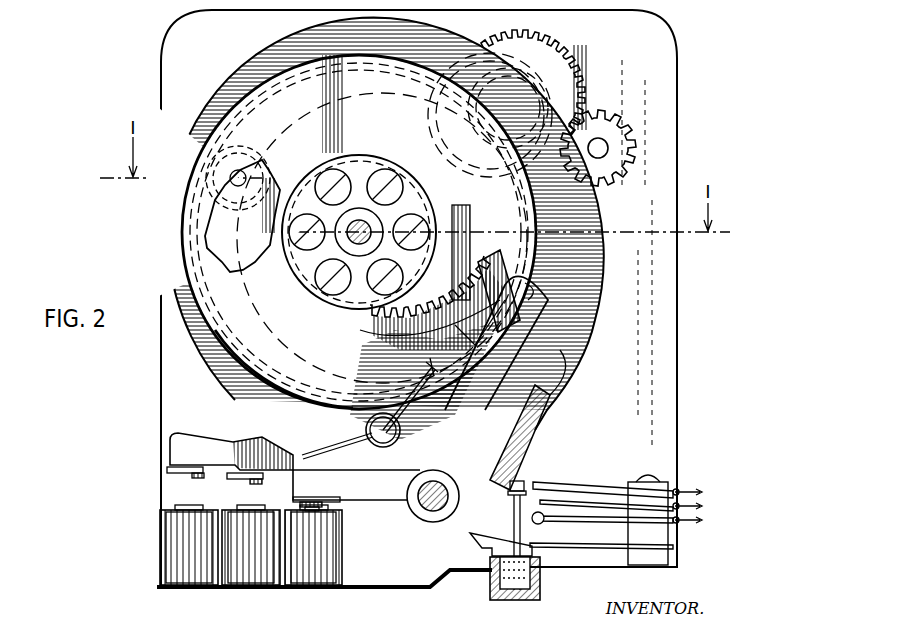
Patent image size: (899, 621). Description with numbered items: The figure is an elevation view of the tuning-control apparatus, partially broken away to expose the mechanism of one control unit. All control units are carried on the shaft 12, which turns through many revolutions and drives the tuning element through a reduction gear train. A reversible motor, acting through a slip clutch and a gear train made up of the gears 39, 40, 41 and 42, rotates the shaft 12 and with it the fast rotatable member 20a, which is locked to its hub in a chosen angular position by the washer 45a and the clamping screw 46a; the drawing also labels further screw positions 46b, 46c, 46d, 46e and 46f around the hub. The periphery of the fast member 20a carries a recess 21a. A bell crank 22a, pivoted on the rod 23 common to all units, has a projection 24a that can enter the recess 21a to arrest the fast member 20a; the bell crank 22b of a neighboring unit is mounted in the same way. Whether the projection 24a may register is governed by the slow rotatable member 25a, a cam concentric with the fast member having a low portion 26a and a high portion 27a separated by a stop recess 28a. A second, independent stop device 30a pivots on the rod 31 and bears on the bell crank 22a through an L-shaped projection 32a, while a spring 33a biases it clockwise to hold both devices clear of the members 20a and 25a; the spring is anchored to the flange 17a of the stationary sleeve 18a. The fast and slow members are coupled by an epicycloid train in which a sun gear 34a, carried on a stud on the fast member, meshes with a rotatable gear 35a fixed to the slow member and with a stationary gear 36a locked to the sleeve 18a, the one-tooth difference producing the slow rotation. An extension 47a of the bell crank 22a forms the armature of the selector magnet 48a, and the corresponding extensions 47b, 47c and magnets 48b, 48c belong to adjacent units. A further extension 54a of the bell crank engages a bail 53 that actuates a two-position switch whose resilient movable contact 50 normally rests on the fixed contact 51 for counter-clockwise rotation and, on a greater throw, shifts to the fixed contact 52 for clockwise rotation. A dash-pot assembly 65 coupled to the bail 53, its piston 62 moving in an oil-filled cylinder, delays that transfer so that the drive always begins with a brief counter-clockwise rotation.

The shaft 12 is at (372, 226).
The flange portion 17a is at (600, 278).
The sleeve 18a is at (368, 302).
The fast rotatable member 20a is at (533, 207).
The recess 21a is at (522, 298).
The bell crank 22a is at (530, 418).
The lever portion 22b is at (542, 405).
The shaft or rod 23 is at (412, 505).
The projection 24a is at (528, 300).
The slow rotatable member 25a is at (405, 334).
The low portion 26a is at (363, 332).
The high portion 27a is at (263, 128).
The stop recess 28a is at (444, 218).
The stop device 30a is at (455, 390).
The pivot rod 31 is at (350, 392).
The L-shaped projection 32a is at (494, 350).
The spring 33a is at (235, 435).
The sun gear 34a is at (206, 236).
The rotatable gear 35a is at (250, 268).
The stationary gear 36a is at (258, 168).
The gear 39 is at (615, 120).
The gear 40 is at (556, 62).
The gear 41 is at (535, 73).
The gear 42 is at (428, 75).
The washer 45a is at (378, 162).
The clamping screw 46a is at (421, 221).
The hole 46b is at (397, 176).
The hole 46c is at (318, 180).
The hole 46d is at (300, 248).
The hole 46e is at (318, 285).
The hole 46f is at (398, 286).
The extension 47a is at (308, 492).
The contact 47b is at (224, 484).
The contact 47c is at (168, 476).
The selector magnet 48a is at (342, 578).
The coil 48b is at (265, 578).
The coil 48c is at (190, 578).
The movable intermediate resilient contact 50 is at (513, 505).
The fixed contact 51 is at (540, 522).
The fixed contact 52 is at (558, 488).
The bail 53 is at (514, 481).
The further extension 54a is at (476, 541).
The piston 62 is at (490, 596).
The dash-pot assembly 65 is at (538, 588).